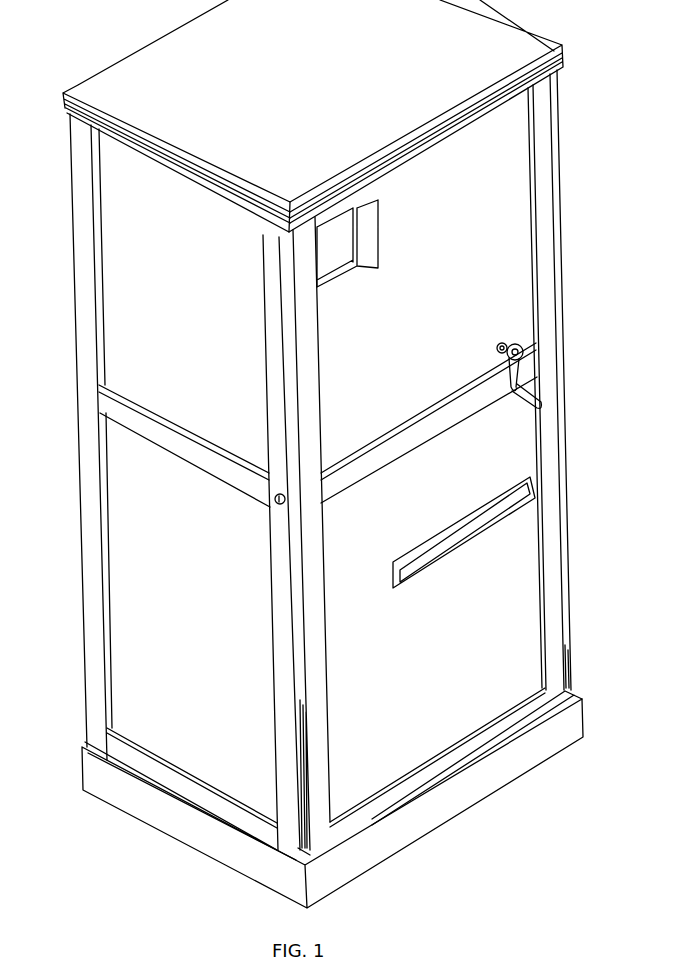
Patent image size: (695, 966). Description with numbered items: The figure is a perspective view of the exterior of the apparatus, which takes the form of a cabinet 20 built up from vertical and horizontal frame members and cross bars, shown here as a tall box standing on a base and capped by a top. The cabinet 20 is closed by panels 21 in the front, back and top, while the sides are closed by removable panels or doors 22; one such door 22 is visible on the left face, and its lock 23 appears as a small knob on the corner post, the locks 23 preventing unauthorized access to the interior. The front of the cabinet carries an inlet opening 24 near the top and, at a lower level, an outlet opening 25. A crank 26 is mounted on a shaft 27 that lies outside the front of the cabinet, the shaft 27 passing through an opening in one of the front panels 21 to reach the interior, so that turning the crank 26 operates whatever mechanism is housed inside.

The cabinet 20 is at (563, 209).
The panels 21 is at (507, 583).
The removable panels or doors 22 is at (130, 596).
The locks 23 is at (278, 504).
The inlet opening 24 is at (337, 252).
The outlet opening 25 is at (507, 505).
The crank 26 is at (513, 380).
The shaft 27 is at (503, 343).